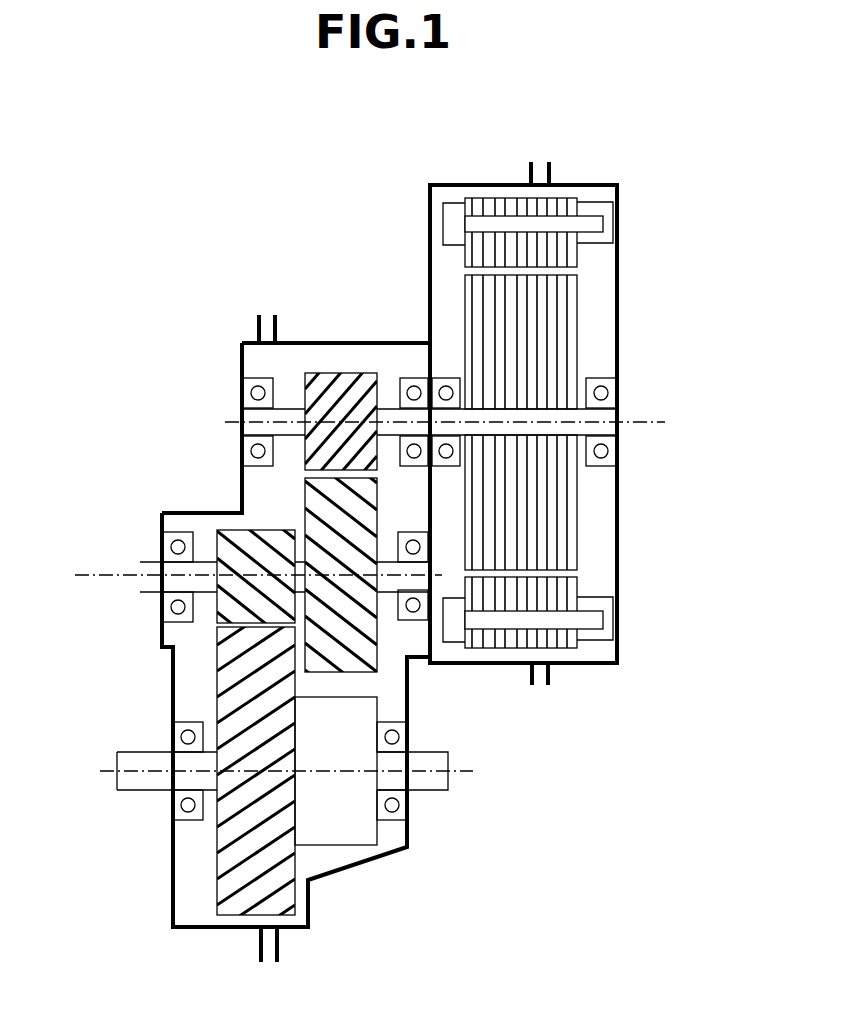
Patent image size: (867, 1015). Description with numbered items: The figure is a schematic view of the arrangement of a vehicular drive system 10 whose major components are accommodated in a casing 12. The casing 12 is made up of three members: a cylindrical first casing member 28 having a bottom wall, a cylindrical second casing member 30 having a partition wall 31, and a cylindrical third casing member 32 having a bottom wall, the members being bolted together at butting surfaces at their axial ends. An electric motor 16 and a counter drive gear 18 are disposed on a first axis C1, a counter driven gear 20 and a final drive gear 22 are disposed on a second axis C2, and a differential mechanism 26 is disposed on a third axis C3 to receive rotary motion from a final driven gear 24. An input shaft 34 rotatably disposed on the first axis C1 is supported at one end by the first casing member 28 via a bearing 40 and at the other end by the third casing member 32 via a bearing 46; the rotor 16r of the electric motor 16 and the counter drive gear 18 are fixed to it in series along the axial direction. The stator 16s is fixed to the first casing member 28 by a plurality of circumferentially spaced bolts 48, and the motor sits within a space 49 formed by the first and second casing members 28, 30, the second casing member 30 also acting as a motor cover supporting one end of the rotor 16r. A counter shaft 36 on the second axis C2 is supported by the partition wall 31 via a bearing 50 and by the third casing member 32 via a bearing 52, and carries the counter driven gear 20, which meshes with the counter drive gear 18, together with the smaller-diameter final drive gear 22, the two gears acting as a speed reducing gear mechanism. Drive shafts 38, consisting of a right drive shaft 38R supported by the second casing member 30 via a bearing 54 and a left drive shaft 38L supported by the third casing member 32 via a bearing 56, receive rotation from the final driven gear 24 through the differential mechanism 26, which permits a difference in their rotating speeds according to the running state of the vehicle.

The vehicular drive system 10 is at (137, 245).
The casing 12 is at (221, 359).
The electric motor 16 is at (586, 318).
The stator 16s is at (521, 250).
The rotor 16r is at (545, 515).
The counter drive gear 18 is at (343, 395).
The counter driven gear 20 is at (318, 497).
The final drive gear 22 is at (232, 551).
The final driven gear 24 is at (228, 895).
The differential mechanism 26 is at (333, 849).
The first casing member 28 is at (583, 665).
The second casing member 30 is at (292, 343).
The partition wall 31 is at (432, 528).
The third casing member 32 is at (168, 695).
The input shaft 34 is at (617, 413).
The counter shaft 36 is at (163, 567).
The drive shafts 38 is at (282, 802).
The left drive shaft 38L is at (125, 782).
The right drive shaft 38R is at (438, 784).
The bearing 40 is at (600, 450).
The bearing 46 is at (258, 393).
The bolts 48 is at (490, 222).
The space 49 is at (440, 297).
The bearing 50 is at (413, 546).
The bearing 52 is at (178, 606).
The bearing 54 is at (395, 738).
The bearing 56 is at (180, 737).
The first axis C1 is at (640, 425).
The second axis C2 is at (96, 574).
The third axis C3 is at (458, 777).